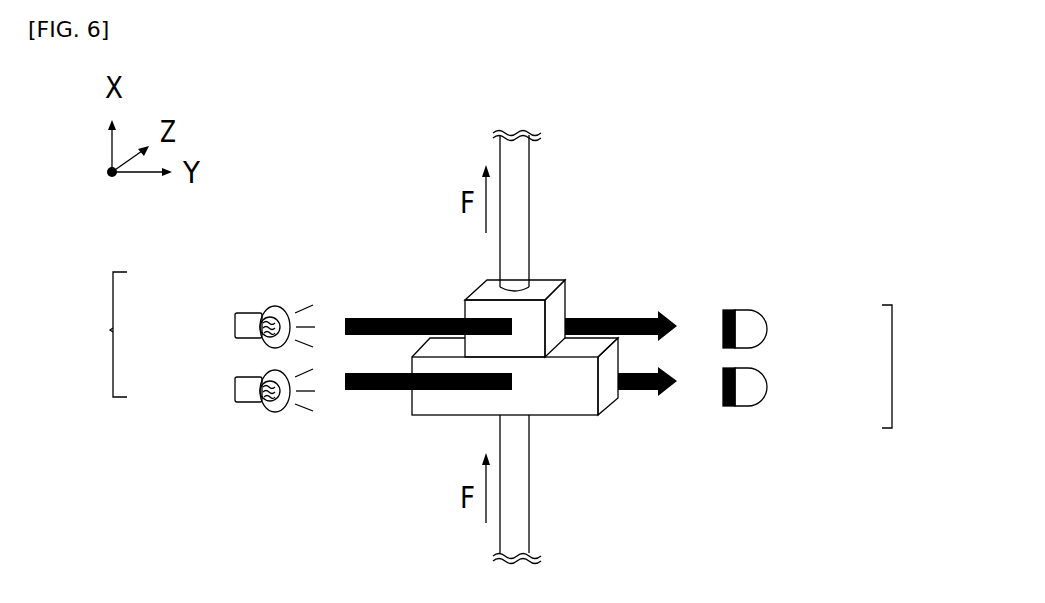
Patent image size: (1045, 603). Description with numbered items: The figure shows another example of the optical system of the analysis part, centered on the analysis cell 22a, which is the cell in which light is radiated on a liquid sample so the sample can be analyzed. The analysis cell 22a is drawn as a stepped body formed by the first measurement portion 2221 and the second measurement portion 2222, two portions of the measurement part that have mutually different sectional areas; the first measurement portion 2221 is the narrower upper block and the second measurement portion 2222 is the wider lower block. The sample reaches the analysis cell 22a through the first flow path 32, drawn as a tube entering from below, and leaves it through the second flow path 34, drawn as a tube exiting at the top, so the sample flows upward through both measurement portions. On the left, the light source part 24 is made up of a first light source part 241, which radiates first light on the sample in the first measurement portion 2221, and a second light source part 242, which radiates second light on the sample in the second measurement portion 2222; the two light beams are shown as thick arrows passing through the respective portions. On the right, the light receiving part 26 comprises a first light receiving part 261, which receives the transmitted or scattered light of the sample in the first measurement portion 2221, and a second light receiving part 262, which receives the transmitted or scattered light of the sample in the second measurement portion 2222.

The analysis cell 22a is at (463, 290).
The first measurement portion 2221 is at (562, 305).
The second measurement portion 2222 is at (593, 355).
The light source part 24 is at (113, 330).
The first light source part 241 is at (235, 328).
The second light source part 242 is at (235, 392).
The light receiving part 26 is at (895, 363).
The first light receiving part 261 is at (768, 330).
The second light receiving part 262 is at (768, 388).
The first flow path 32 is at (529, 522).
The second flow path 34 is at (529, 178).